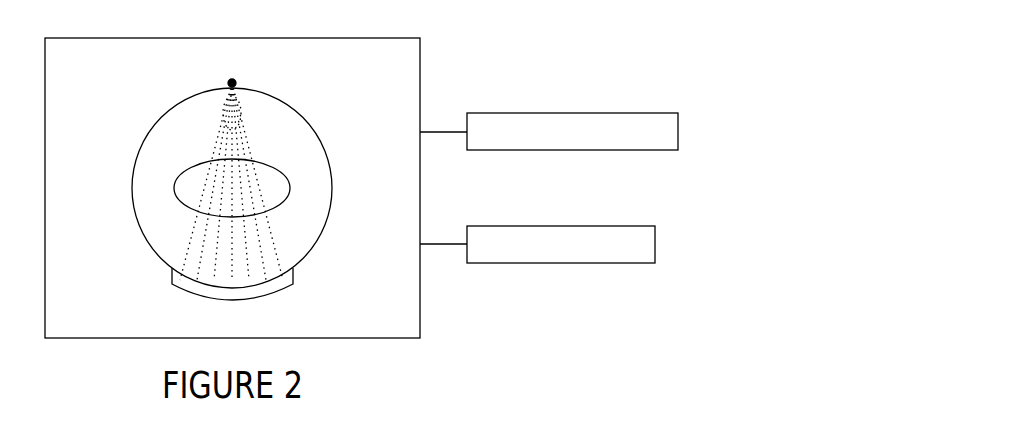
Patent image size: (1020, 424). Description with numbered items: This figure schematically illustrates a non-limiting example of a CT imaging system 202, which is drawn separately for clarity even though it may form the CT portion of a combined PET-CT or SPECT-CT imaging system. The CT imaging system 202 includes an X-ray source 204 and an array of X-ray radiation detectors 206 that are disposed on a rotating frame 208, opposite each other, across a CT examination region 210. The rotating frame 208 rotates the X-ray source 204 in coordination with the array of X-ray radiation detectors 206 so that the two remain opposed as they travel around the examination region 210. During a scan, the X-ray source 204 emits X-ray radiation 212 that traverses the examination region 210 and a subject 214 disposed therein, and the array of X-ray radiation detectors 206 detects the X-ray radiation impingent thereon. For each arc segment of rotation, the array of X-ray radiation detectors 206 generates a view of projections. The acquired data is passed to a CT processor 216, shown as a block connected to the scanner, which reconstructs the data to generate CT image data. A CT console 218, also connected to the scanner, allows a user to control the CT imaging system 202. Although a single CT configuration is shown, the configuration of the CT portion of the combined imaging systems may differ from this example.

The CT imaging system 202 is at (234, 38).
The X-ray source 204 is at (235, 80).
The array of X-ray radiation detectors 206 is at (293, 282).
The rotating frame 208 is at (295, 107).
The CT examination region 210 is at (188, 162).
The X-ray radiation 212 is at (247, 140).
The subject 214 is at (288, 188).
The CT processor 216 is at (572, 113).
The CT console 218 is at (562, 226).